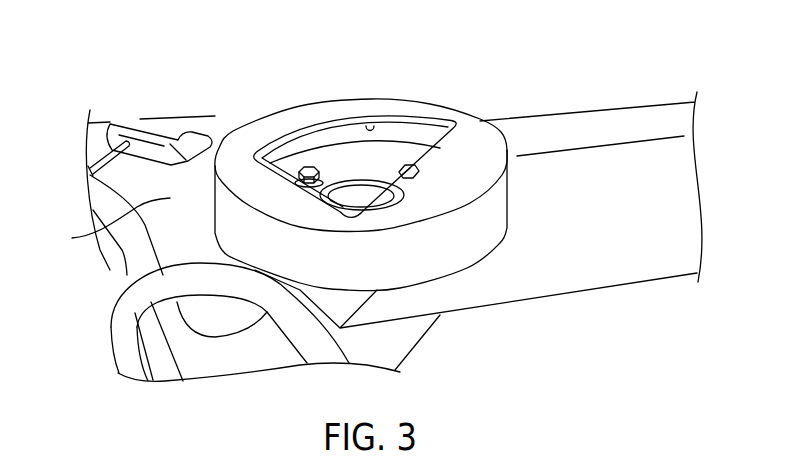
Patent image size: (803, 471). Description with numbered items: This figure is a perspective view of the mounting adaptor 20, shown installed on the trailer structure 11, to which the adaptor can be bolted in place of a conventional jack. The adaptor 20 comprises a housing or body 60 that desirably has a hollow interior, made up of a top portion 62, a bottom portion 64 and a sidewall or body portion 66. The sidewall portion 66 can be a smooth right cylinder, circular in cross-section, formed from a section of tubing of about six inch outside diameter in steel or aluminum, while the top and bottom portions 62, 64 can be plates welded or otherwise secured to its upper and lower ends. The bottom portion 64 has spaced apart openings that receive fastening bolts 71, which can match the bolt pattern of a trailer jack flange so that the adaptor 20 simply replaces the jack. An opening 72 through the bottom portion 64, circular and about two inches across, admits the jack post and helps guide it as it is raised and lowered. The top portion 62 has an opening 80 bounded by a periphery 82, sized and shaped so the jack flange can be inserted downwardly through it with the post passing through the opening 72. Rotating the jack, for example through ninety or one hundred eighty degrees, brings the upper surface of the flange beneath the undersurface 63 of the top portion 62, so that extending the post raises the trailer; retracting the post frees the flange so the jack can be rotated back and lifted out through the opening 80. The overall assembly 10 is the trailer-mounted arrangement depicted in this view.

The vehicle frame 10 is at (100, 283).
The trailer structure 11 is at (78, 238).
The mounting adaptor 20 is at (381, 193).
The housing or body 60 is at (381, 193).
The top portion 62 is at (357, 105).
The undersurface 63 is at (372, 126).
The bottom portion 64 is at (390, 155).
The sidewall or body portion 66 is at (490, 238).
The fastening bolts 71 is at (306, 172).
The opening 72 is at (365, 204).
The opening 80 is at (333, 131).
The periphery 82 is at (300, 133).